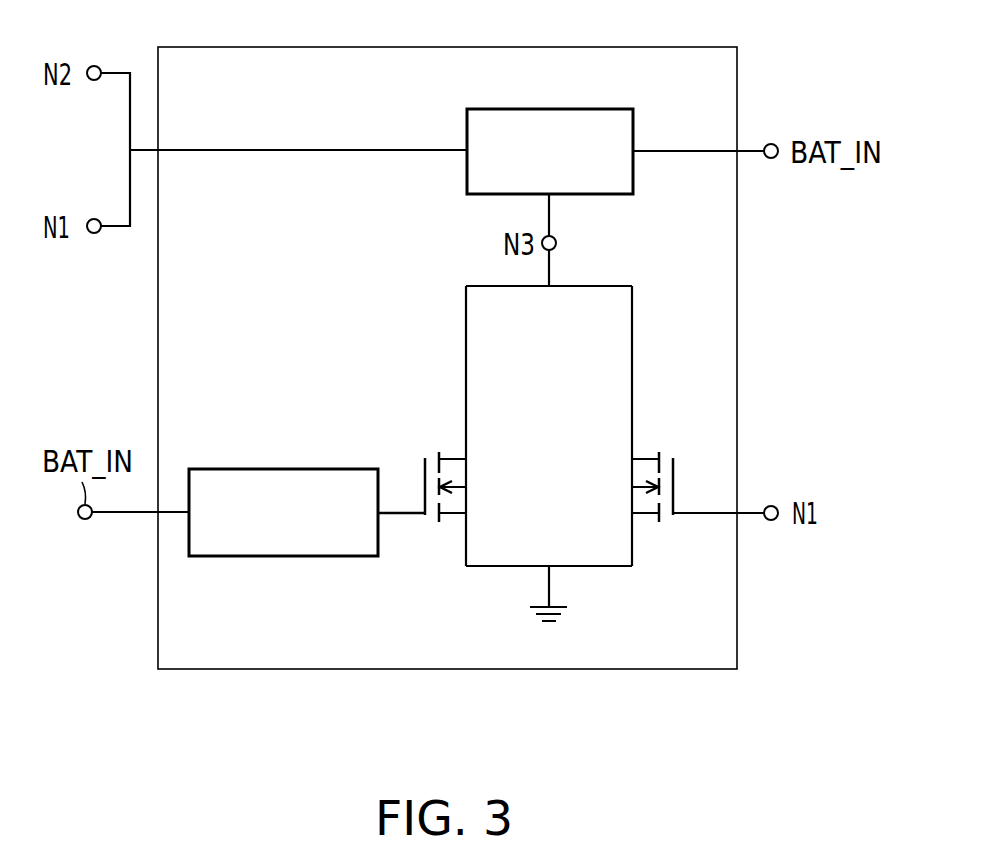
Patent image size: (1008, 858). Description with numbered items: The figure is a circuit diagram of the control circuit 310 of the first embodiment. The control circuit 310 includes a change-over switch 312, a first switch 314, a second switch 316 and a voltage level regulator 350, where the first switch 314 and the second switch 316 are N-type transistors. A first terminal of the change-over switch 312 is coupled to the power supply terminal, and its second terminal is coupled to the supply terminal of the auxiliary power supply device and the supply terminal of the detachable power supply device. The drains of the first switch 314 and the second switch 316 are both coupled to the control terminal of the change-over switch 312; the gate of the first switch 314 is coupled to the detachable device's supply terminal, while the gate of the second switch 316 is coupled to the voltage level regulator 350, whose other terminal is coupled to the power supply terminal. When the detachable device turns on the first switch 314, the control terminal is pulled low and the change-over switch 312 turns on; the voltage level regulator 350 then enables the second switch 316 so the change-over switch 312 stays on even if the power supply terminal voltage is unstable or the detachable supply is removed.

The control circuit 310 is at (653, 47).
The change-over switch 312 is at (583, 107).
The first switch 314 is at (665, 455).
The second switch 316 is at (433, 455).
The voltage level regulator 350 is at (330, 468).